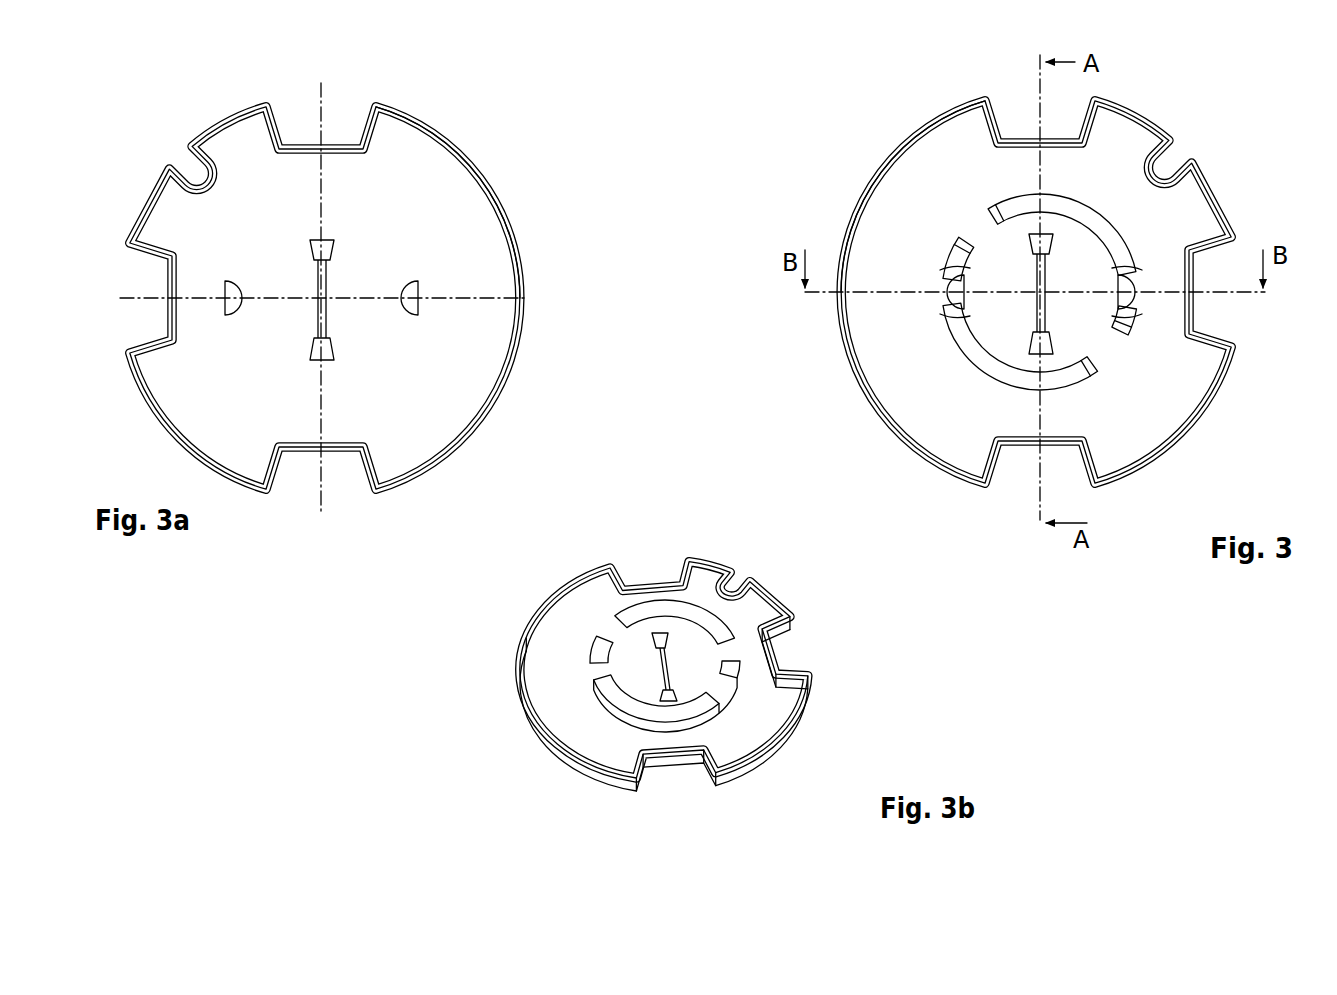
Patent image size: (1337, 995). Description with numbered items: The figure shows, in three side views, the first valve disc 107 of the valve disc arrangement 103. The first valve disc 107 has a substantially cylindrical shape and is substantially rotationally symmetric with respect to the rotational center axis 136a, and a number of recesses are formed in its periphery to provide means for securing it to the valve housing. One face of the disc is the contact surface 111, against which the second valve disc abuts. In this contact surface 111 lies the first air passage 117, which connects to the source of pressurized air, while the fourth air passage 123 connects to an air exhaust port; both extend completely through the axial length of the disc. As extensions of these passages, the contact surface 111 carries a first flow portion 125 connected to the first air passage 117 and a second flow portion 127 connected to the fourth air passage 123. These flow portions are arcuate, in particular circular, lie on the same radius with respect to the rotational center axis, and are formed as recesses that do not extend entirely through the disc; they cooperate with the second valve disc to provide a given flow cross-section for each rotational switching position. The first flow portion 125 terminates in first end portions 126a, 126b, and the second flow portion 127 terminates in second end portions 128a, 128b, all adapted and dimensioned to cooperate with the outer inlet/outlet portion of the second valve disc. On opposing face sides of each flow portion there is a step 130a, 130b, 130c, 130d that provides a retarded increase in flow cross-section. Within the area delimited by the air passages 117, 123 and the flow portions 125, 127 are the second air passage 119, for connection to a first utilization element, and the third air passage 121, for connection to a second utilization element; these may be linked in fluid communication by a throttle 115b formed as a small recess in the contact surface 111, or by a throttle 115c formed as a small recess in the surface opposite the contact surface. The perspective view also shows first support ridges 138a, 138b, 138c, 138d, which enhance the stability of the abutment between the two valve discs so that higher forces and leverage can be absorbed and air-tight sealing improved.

In FIG. 3A, the valve disc arrangement 103 is at (185, 125).
In FIG. 3, the valve disc arrangement 103 is at (1036, 292).
In FIG. 3B, the valve disc arrangement 103 is at (465, 670).
In FIG. 3A, the first valve disc 107 is at (452, 146).
In FIG. 3, the first valve disc 107 is at (912, 150).
In FIG. 3B, the first valve disc 107 is at (530, 648).
In FIG. 3, the contact surface 111 is at (888, 245).
In FIG. 3B, the contact surface 111 is at (720, 618).
In FIG. 3, the throttle 115b is at (1118, 350).
In FIG. 3A, the throttle 115c is at (322, 300).
In FIG. 3A, the first air passage 117 is at (228, 296).
In FIG. 3, the first air passage 117 is at (1136, 303).
In FIG. 3A, the second air passage 119 is at (318, 240).
In FIG. 3, the second air passage 119 is at (1038, 233).
In FIG. 3A, the third air passage 121 is at (324, 360).
In FIG. 3, the third air passage 121 is at (1040, 350).
In FIG. 3B, the third air passage 121 is at (664, 667).
In FIG. 3A, the fourth air passage 123 is at (418, 302).
In FIG. 3, the fourth air passage 123 is at (955, 300).
In FIG. 3, the first flow portion 125 is at (1094, 220).
In FIG. 3B, the first flow portion 125 is at (680, 625).
In FIG. 3, the first end portion 126a is at (1140, 345).
In FIG. 3B, the first end portion 126a is at (745, 688).
In FIG. 3, the first end portion 126b is at (990, 200).
In FIG. 3B, the first end portion 126b is at (625, 612).
In FIG. 3, the second flow portion 127 is at (985, 358).
In FIG. 3B, the second flow portion 127 is at (652, 718).
In FIG. 3, the second end portion 128a is at (945, 243).
In FIG. 3B, the second end portion 128a is at (592, 655).
In FIG. 3, the second end portion 128b is at (1083, 358).
In FIG. 3B, the second end portion 128b is at (707, 722).
In FIG. 3, the step 130a is at (1113, 347).
In FIG. 3B, the step 130a is at (713, 690).
In FIG. 3, the step 130b is at (985, 198).
In FIG. 3B, the step 130b is at (620, 628).
In FIG. 3, the step 130c is at (978, 222).
In FIG. 3B, the step 130c is at (610, 650).
In FIG. 3, the step 130d is at (1095, 393).
In FIG. 3B, the step 130d is at (704, 706).
In FIG. 3A, the rotational center axis 136a is at (330, 293).
In FIG. 3B, the first support ridge 138a is at (712, 568).
In FIG. 3B, the first support ridge 138b is at (768, 612).
In FIG. 3B, the first support ridge 138c is at (782, 688).
In FIG. 3B, the first support ridge 138d is at (588, 742).